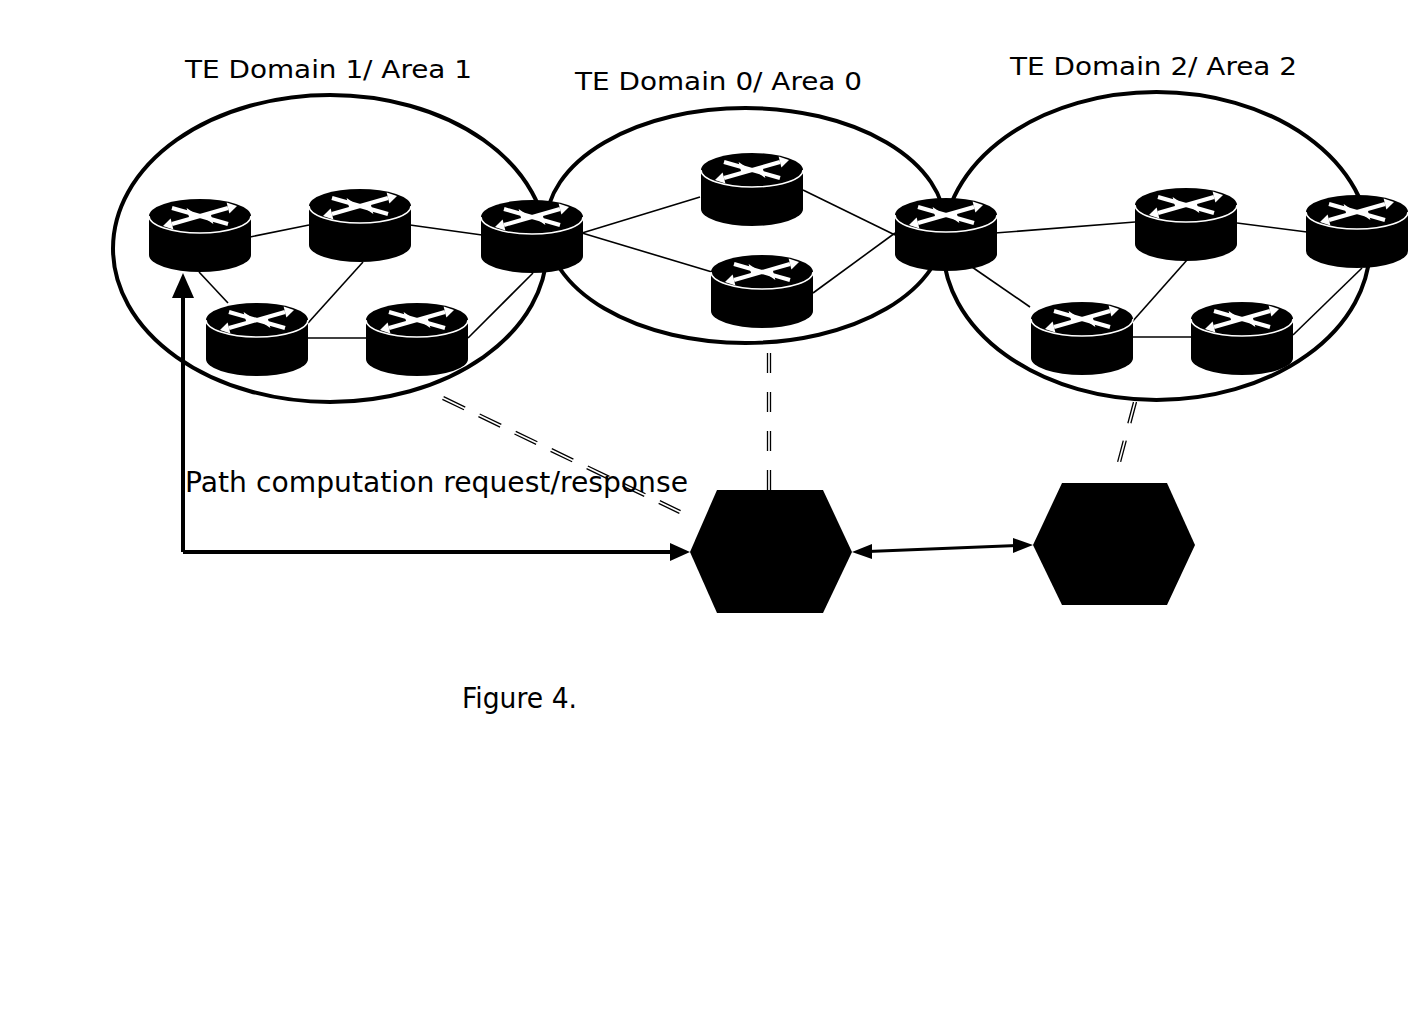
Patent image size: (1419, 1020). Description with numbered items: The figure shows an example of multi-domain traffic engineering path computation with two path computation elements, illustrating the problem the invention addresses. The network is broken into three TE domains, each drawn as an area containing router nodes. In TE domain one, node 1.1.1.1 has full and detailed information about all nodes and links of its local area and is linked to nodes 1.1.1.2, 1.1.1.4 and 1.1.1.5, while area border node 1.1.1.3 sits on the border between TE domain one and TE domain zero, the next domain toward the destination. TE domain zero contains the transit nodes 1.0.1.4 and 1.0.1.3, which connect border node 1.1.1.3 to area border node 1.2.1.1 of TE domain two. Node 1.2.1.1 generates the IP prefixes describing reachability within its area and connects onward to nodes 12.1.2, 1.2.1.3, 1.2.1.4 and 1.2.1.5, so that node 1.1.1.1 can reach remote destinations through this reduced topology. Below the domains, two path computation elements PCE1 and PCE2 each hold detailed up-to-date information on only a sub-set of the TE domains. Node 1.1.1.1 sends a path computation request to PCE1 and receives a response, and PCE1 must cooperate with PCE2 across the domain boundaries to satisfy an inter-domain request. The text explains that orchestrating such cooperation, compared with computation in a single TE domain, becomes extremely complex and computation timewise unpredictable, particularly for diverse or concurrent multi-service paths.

The node 1.1.1.1 is at (200, 217).
The router 1.1.1.2 in TE Domain 1 / Area 1 1.1.1.2 is at (360, 214).
The area border node 1.1.1.3 is at (516, 223).
The router 1.1.1.4 in TE Domain 1 / Area 1 1.1.1.4 is at (257, 328).
The node 1.1.1.5 is at (421, 328).
The router 1.0.1.4 in TE Domain 0 / Area 0 1.0.1.4 is at (717, 189).
The router 1.0.1.3 in TE Domain 0 / Area 0 1.0.1.3 is at (727, 291).
The area border node 1.2.1.1 is at (967, 218).
The router 1.2.1.2 in TE Domain 2 / Area 2 12.1.2 is at (1186, 213).
The router 1.2.1.3 in TE Domain 2 / Area 2 1.2.1.3 is at (1341, 220).
The router 1.2.1.4 in TE Domain 2 / Area 2 1.2.1.4 is at (1082, 326).
The router 1.2.1.5 in TE Domain 2 / Area 2 1.2.1.5 is at (1246, 326).
The path computation element PCE1 is at (771, 551).
The path computation element PCE2 is at (1114, 544).